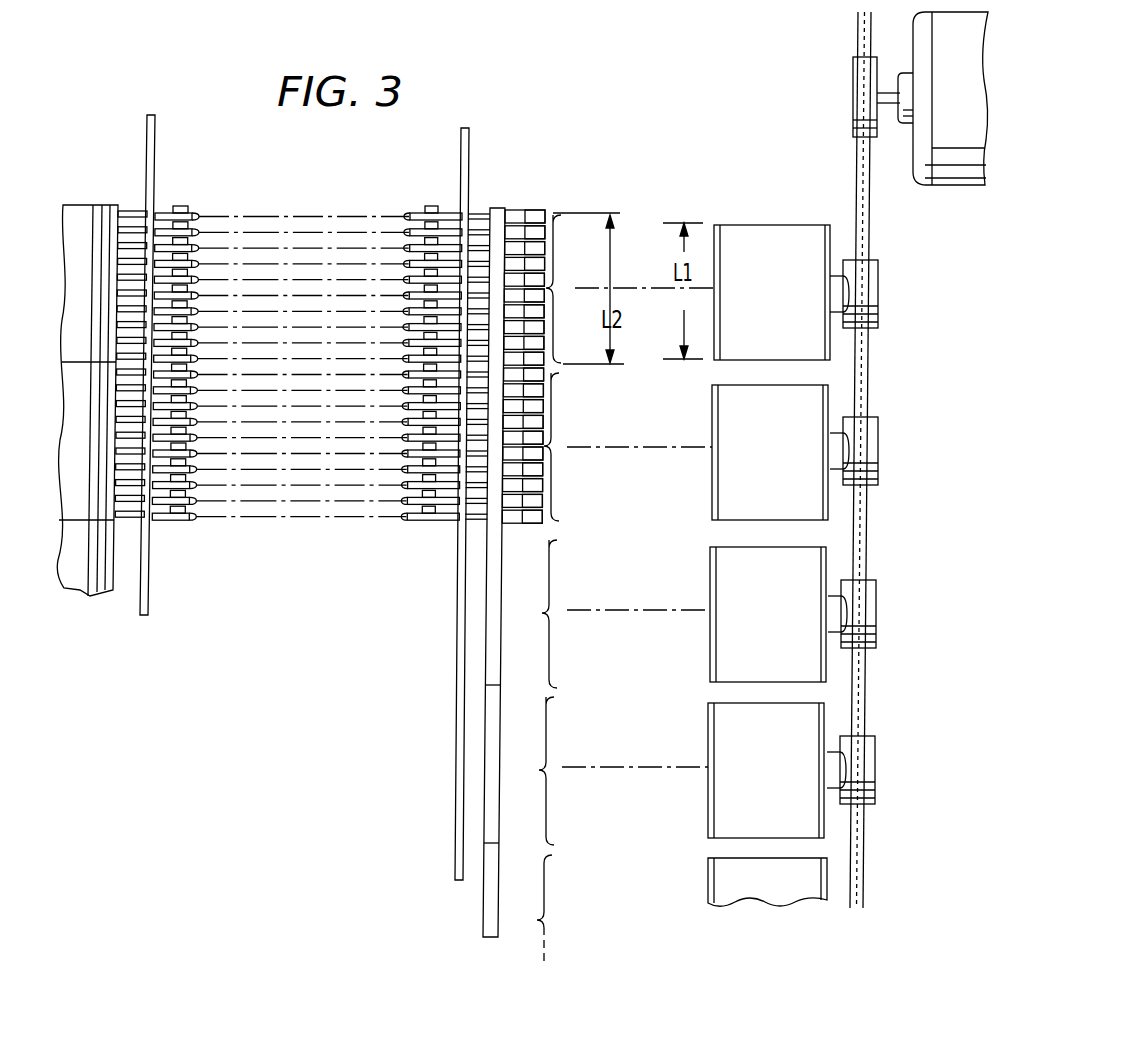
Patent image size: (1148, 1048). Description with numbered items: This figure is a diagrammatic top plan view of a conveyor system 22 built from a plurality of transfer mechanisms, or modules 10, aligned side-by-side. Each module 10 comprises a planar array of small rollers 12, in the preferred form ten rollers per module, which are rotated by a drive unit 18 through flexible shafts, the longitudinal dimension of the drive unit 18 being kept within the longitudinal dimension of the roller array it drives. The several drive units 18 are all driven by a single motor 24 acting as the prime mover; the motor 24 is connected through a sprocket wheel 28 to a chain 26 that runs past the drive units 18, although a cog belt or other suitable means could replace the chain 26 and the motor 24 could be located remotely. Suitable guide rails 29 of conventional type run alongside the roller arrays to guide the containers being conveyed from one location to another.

The transfer mechanism 10 is at (586, 243).
The rollers 12 is at (410, 520).
The drive unit 18 is at (778, 318).
The conveyor system 22 is at (667, 158).
The motor 24 is at (962, 90).
The chain 26 is at (857, 180).
The sprocket wheel 28 is at (853, 82).
The guide rails 29 is at (493, 752).